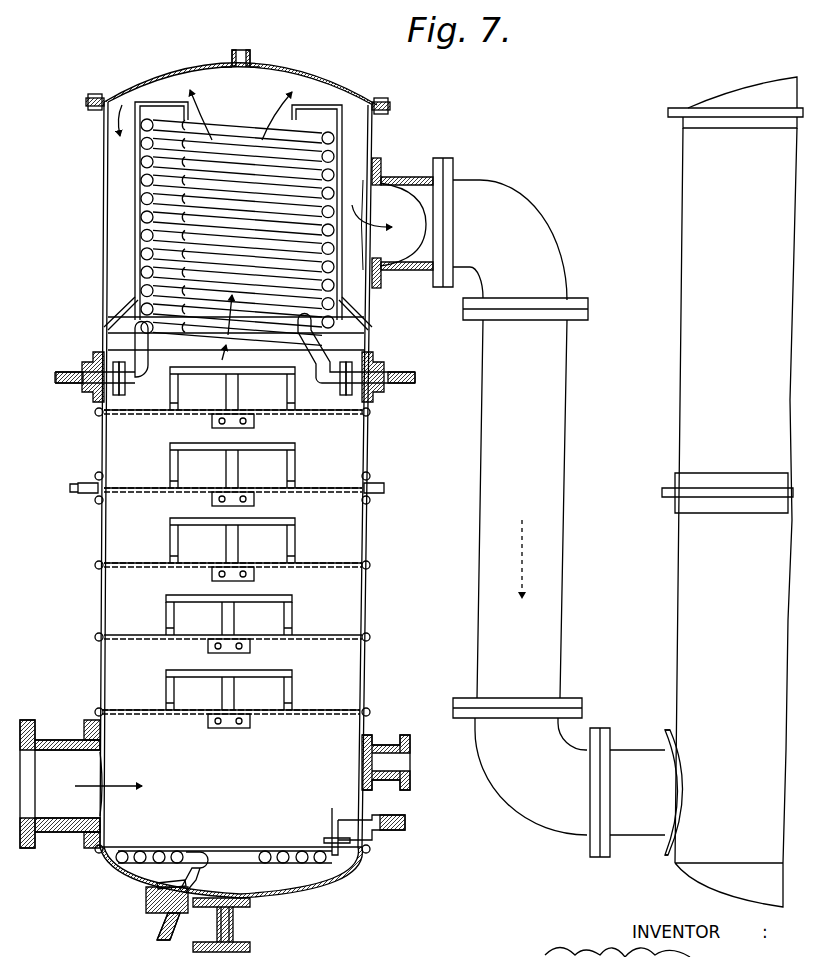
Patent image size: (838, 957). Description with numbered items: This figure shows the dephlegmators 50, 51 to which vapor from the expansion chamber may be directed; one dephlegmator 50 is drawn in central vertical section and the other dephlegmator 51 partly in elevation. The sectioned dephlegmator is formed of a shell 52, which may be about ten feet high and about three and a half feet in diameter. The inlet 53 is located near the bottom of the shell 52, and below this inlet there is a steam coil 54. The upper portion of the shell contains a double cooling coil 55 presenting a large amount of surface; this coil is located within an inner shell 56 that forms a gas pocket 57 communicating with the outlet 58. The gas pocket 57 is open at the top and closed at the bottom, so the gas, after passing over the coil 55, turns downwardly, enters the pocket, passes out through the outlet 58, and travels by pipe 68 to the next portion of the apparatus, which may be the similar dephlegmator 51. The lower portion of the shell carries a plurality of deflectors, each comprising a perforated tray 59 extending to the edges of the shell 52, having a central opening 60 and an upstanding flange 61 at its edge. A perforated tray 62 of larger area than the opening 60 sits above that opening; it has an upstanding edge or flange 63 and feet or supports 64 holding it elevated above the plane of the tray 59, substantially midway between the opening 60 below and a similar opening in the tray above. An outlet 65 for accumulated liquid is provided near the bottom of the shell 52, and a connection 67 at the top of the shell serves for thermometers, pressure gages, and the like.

The dephlegmator 50 is at (373, 139).
The dephlegmator 51 is at (732, 492).
The shell 52 is at (365, 443).
The inlet 53 is at (81, 784).
The steam coil 54 is at (146, 850).
The double cooling coil 55 is at (235, 108).
The shell 56 is at (340, 172).
The gas pocket 57 is at (117, 163).
The outlet 58 is at (392, 223).
The perforated tray 59 is at (322, 638).
The central opening 60 is at (200, 640).
The upstanding flange 61 is at (106, 636).
The perforated tray 62 is at (272, 600).
The upstanding edge or flange 63 is at (172, 600).
The feet or supports 64 is at (293, 618).
The outlet for accumulated liquid 65 is at (364, 759).
The connection 67 is at (240, 53).
The pipe 68 is at (558, 507).